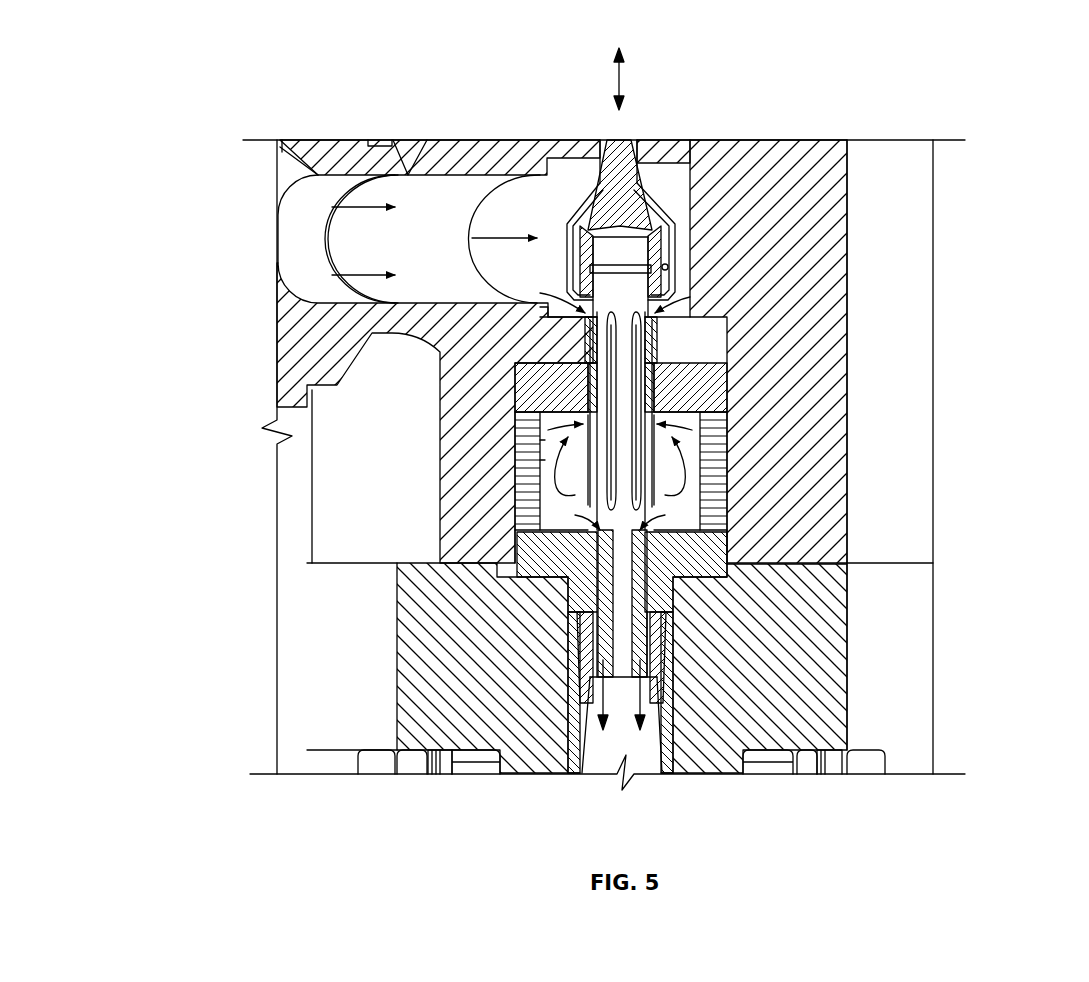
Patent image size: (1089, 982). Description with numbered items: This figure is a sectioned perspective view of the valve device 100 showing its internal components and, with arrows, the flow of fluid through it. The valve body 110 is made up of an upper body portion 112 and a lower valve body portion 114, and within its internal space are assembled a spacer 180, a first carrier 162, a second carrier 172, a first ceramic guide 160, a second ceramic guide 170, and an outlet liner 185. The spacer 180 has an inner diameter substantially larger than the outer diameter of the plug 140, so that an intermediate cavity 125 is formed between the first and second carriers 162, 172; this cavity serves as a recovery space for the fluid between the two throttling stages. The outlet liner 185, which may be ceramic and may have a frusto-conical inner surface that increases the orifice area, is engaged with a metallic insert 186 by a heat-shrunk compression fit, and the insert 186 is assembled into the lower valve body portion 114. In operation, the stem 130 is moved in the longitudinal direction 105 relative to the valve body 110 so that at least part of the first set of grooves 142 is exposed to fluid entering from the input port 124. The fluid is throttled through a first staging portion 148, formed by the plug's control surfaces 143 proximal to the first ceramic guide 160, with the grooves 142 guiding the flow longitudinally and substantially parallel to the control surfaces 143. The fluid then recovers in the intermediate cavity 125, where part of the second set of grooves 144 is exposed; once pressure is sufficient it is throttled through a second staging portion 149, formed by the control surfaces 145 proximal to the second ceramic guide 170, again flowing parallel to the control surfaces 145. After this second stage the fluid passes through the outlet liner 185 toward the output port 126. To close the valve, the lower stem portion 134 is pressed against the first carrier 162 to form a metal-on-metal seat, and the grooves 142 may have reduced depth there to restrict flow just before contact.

The valve device 100 is at (340, 62).
The longitudinal direction 105 is at (625, 75).
The valve body 110 is at (1005, 493).
The upper body portion 112 is at (918, 527).
The lower valve body portion 114 is at (918, 616).
The input port 124 is at (265, 233).
The intermediate cavity 125 is at (695, 388).
The output port 126 is at (648, 764).
The stem 130 is at (630, 138).
The lower stem portion 134 is at (652, 205).
The plug 140 is at (625, 289).
The first set of grooves 142 is at (560, 445).
The control surfaces 143 is at (570, 428).
The second set of grooves 144 is at (596, 660).
The control surfaces 145 is at (600, 630).
The first staging portion 148 is at (600, 374).
The second staging portion 149 is at (598, 551).
The first ceramic guide 160 is at (660, 342).
The first carrier 162 is at (662, 366).
The second ceramic guide 170 is at (778, 615).
The second carrier 172 is at (768, 574).
The spacer 180 is at (715, 462).
The outlet liner 185 is at (577, 702).
The insert 186 is at (578, 773).